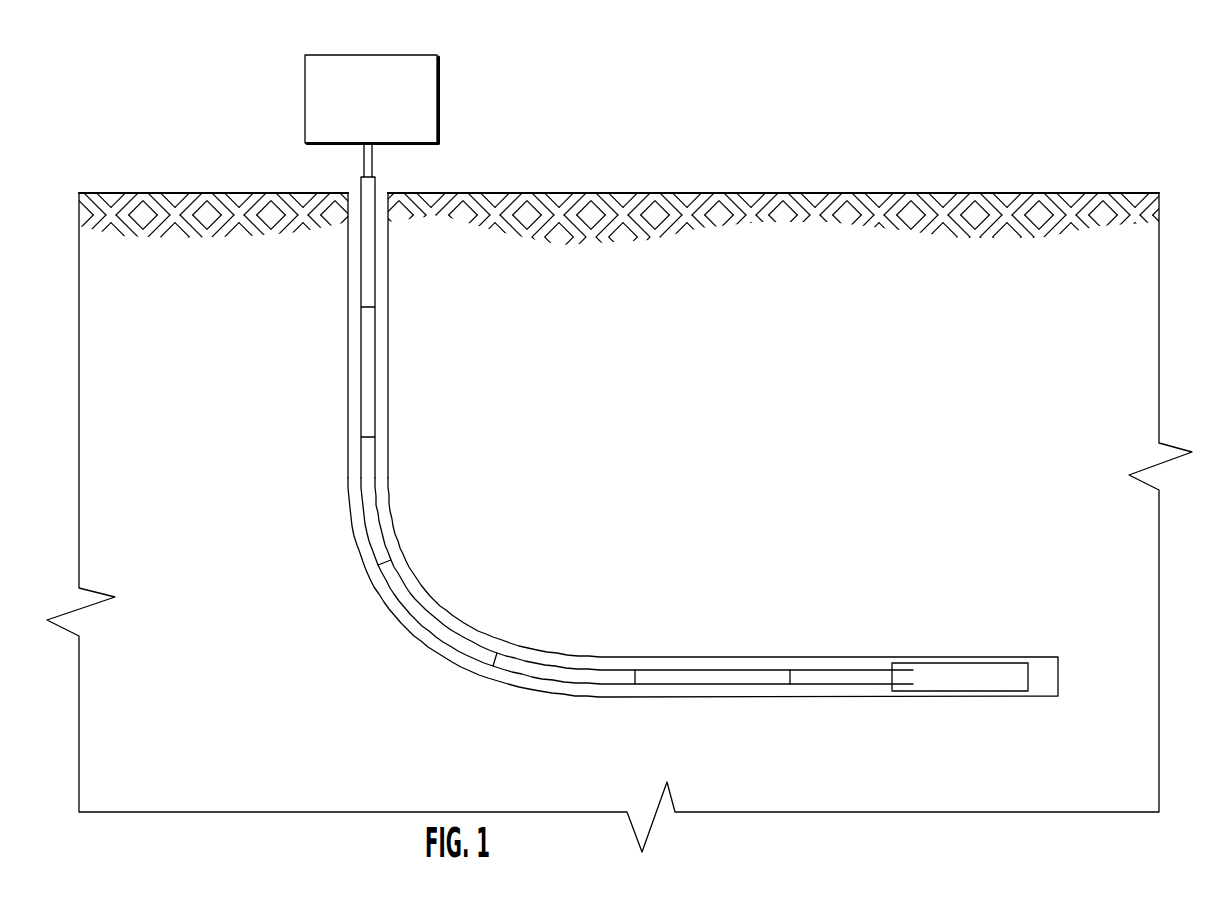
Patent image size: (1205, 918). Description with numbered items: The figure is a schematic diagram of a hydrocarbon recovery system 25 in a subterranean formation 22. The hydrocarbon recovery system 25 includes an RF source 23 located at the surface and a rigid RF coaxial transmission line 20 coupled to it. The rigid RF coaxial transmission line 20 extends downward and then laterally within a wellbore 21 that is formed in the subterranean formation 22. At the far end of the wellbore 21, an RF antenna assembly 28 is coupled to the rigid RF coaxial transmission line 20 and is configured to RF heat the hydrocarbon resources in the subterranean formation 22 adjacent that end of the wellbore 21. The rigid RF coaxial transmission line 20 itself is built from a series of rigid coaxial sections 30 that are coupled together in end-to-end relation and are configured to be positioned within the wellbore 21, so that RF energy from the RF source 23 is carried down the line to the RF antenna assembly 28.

The rigid RF coaxial transmission line 20 is at (345, 281).
The wellbore 21 is at (380, 233).
The subterranean formation 22 is at (728, 250).
The RF source 23 is at (437, 82).
The hydrocarbon recovery system 25 is at (941, 108).
The RF antenna assembly 28 is at (963, 662).
The rigid coaxial sections 30 is at (367, 465).